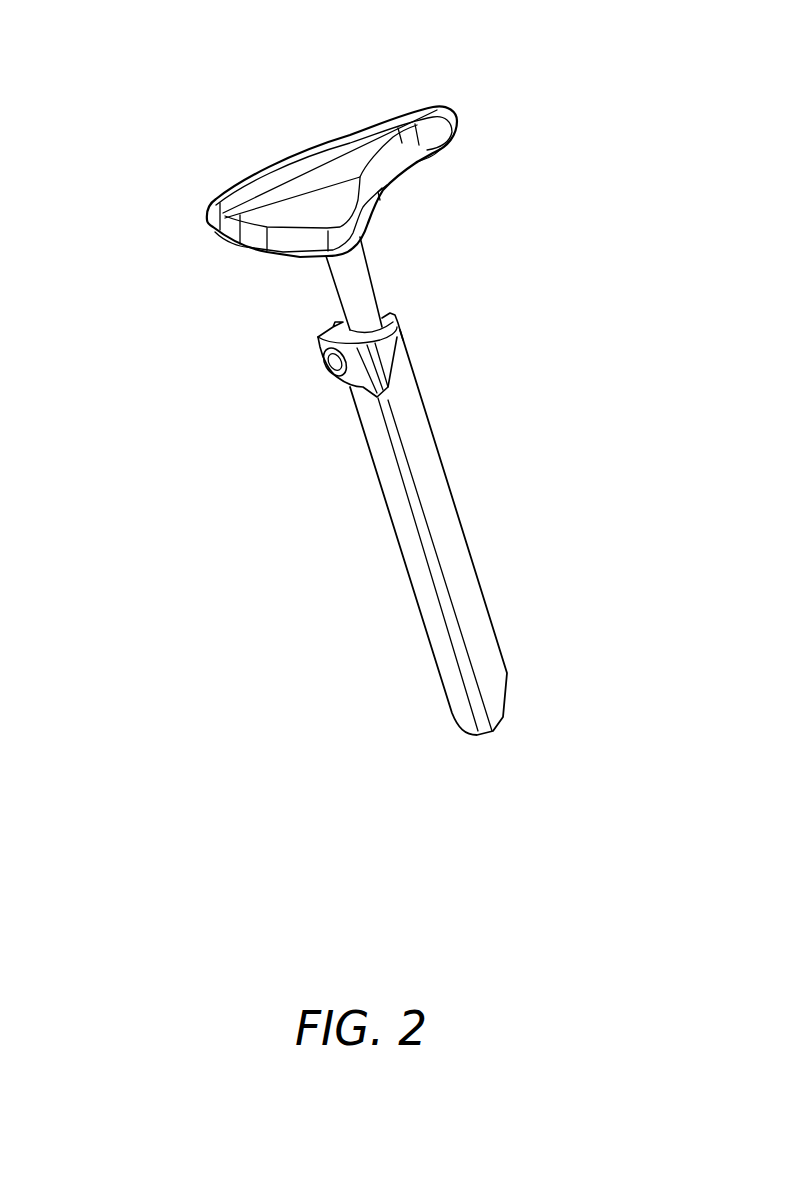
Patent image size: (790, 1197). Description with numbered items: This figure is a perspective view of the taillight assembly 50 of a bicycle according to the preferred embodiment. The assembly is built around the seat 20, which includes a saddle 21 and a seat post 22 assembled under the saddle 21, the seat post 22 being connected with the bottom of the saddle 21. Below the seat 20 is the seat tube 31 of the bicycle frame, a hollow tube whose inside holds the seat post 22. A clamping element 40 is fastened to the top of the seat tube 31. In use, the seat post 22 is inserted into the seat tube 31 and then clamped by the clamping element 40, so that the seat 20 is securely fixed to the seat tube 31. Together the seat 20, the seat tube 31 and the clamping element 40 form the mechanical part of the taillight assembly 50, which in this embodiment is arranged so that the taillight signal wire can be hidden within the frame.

The seat 20 is at (170, 165).
The saddle 21 is at (347, 157).
The seat post 22 is at (357, 270).
The clamping element 40 is at (393, 342).
The taillight assembly 50 is at (318, 383).
The seat tube 31 is at (460, 583).